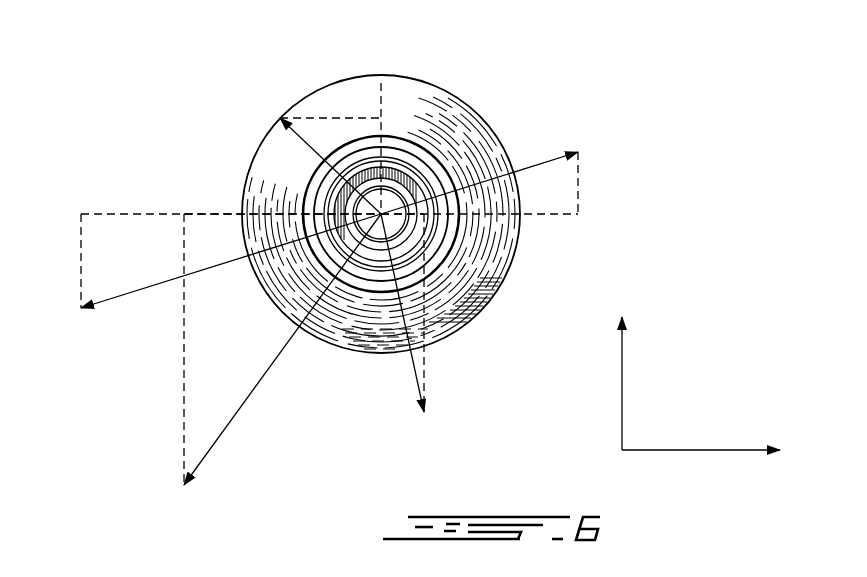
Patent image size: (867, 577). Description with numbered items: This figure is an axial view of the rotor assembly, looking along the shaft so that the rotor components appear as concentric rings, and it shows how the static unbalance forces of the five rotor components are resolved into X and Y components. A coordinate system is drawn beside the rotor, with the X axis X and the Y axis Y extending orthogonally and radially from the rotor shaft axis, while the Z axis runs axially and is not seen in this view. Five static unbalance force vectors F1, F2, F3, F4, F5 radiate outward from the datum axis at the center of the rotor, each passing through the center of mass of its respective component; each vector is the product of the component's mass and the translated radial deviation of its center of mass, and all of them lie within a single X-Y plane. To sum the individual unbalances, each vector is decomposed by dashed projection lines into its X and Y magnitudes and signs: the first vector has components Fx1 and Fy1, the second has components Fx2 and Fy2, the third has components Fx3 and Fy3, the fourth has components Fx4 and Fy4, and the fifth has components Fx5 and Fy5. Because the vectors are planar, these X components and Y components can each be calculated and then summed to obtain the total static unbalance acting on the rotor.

The static unbalance force vector F1 is at (479, 171).
The static unbalance force vector F2 is at (314, 154).
The static unbalance force vector F3 is at (402, 319).
The static unbalance force vector F4 is at (214, 266).
The static unbalance force vector F5 is at (265, 353).
The X component of static unbalance force Fx1 is at (479, 229).
The Y component of static unbalance force Fy1 is at (598, 183).
The X component of static unbalance force Fx2 is at (328, 117).
The Y component of static unbalance force Fy2 is at (386, 126).
The X component of static unbalance force Fx3 is at (490, 290).
The Y component of static unbalance force Fy3 is at (444, 313).
The X component of static unbalance force Fx4 is at (231, 201).
The Y component of static unbalance force Fy4 is at (58, 261).
The X component of static unbalance force Fx5 is at (282, 201).
The Y component of static unbalance force Fy5 is at (161, 349).
The X axis X is at (711, 453).
The Y axis Y is at (622, 370).